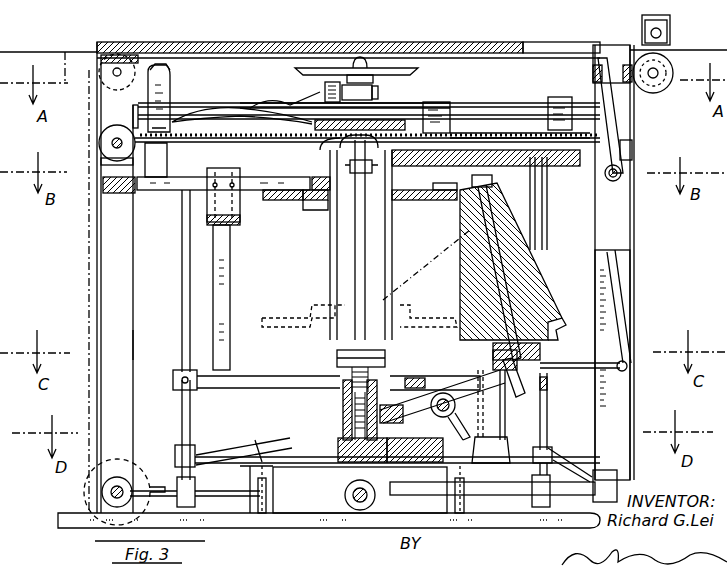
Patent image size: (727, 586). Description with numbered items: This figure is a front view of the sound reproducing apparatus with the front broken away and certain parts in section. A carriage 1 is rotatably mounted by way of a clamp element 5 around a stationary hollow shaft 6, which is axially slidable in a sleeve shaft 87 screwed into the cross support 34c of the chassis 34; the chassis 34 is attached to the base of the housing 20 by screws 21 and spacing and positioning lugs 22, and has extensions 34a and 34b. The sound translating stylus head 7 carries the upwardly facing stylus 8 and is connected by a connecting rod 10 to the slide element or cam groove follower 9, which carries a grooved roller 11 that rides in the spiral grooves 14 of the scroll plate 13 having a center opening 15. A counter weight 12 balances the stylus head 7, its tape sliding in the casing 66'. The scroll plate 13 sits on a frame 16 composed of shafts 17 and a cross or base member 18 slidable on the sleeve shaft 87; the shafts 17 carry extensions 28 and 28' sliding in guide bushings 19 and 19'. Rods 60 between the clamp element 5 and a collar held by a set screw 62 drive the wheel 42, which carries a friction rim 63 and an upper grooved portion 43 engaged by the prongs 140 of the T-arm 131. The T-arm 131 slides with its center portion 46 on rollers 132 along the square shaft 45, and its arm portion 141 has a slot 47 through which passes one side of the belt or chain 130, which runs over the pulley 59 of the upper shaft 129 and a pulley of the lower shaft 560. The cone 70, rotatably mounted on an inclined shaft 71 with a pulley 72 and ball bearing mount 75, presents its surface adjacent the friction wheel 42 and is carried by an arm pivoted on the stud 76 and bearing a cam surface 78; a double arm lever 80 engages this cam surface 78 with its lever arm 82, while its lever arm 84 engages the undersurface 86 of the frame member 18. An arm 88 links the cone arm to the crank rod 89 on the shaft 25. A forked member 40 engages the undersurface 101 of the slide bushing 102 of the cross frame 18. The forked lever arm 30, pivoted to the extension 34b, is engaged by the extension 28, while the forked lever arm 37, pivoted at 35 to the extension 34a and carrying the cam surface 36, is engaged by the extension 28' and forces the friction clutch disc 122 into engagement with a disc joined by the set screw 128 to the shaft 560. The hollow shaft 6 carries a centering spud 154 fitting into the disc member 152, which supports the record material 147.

The record material 147 is at (72, 37).
The stylus 8 is at (162, 63).
The sound translating stylus head 7 is at (172, 80).
The friction rim 63 is at (100, 78).
The carriage 1 is at (133, 112).
The connecting rod 10 is at (228, 112).
The shaft 129 is at (99, 143).
The pulley 59 is at (112, 155).
The slot or hole 47 is at (145, 190).
The arm portion 141 is at (167, 190).
The T-arm 131 is at (182, 192).
The center portion 46 is at (210, 212).
The rollers 132 is at (208, 242).
The square shaft 45 is at (231, 270).
The frame 16 is at (182, 293).
The belt or chain 130 is at (133, 345).
The shafts 17 is at (182, 353).
The cross or base member 18 is at (250, 376).
The undersurface 86 is at (297, 392).
The rods 60 is at (331, 233).
The sleeve shaft 87 is at (355, 270).
The stationary hollow shaft 6 is at (394, 176).
The centering spud 154 is at (360, 57).
The disc member 152 is at (422, 67).
The center opening 15 is at (318, 150).
The clamp element 5 is at (400, 104).
The slide element or cam groove follower 9 is at (452, 104).
The casing 66' is at (370, 134).
The grooved roller 11 is at (480, 157).
The scroll plate 13 is at (500, 150).
The counter weight 12 is at (560, 97).
The spiral grooves 14 is at (622, 150).
The shaft 25 is at (622, 170).
The set screw 62 is at (617, 45).
The prongs 140 is at (305, 210).
The upper grooved portion 43 is at (424, 209).
The wheel 42 is at (443, 197).
The double arm lever 80 is at (400, 285).
The inclined shaft 71 is at (493, 262).
The cone 70 is at (537, 297).
The pulley 72 is at (585, 309).
The ball bearing mount 75 is at (541, 350).
The crank rod 89 is at (620, 287).
The arm 88 is at (630, 372).
The cam surface 78 is at (548, 383).
The lever arm 82 is at (495, 372).
The forked member 40 is at (395, 428).
The stud 76 is at (492, 422).
The extension 28 is at (552, 418).
The guide bushing 19 is at (552, 466).
The extension 34b is at (580, 470).
The forked lever arm 30 is at (515, 488).
The extension 28' is at (167, 430).
The guide bushing 19' is at (372, 443).
The forked lever arm 37 is at (157, 487).
The extension 34a is at (245, 448).
The chassis 34 is at (265, 462).
The undersurface 101 is at (343, 417).
The slide bushing 102 is at (338, 442).
The lever arm 84 is at (378, 455).
The cross support 34c is at (350, 483).
The housing 20 is at (353, 520).
The pivot 35 is at (247, 548).
The spacing and positioning lugs 22 is at (266, 497).
The screws 21 is at (262, 513).
The cam surface 36 is at (197, 497).
The set screw 128 is at (143, 503).
The shaft 560 is at (102, 488).
The friction clutch disc 122 is at (100, 498).